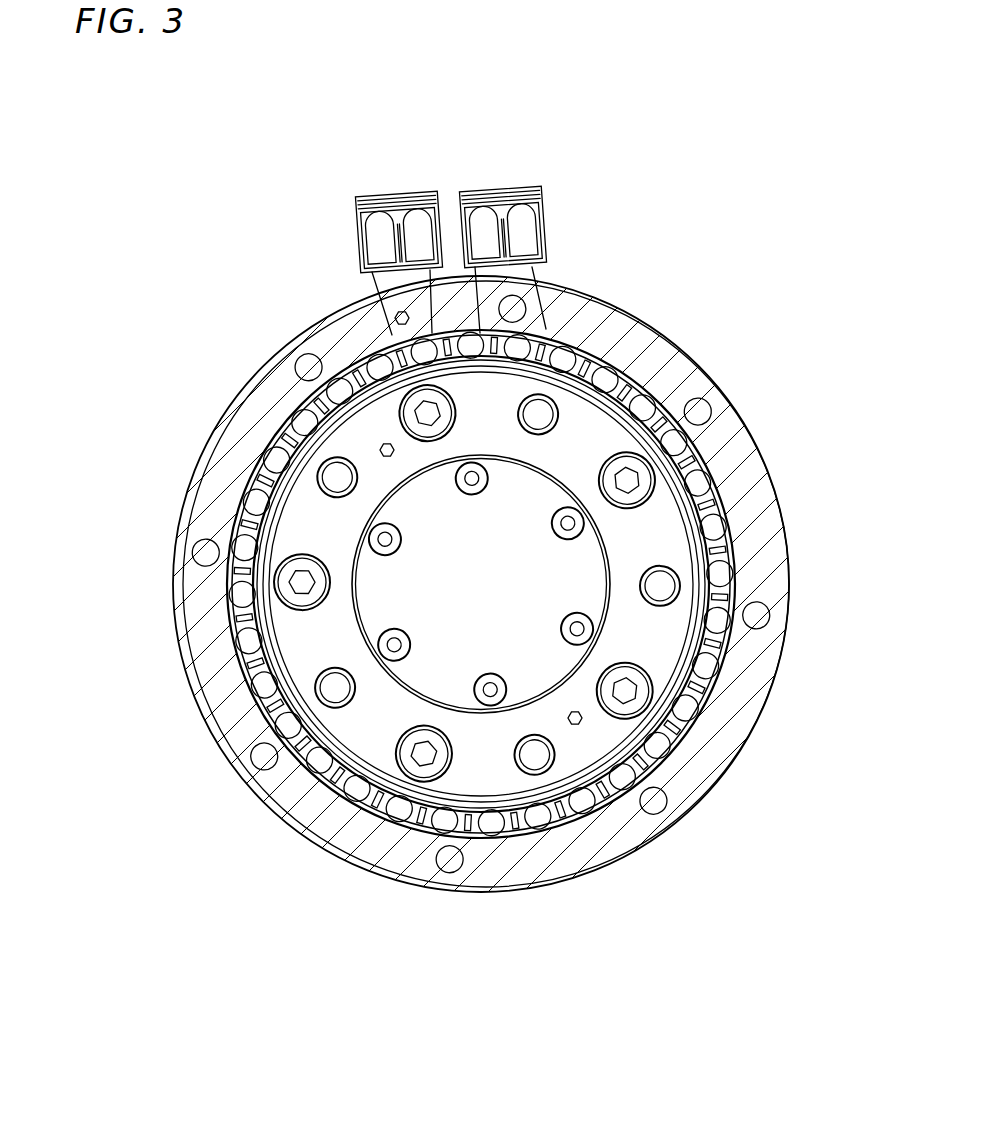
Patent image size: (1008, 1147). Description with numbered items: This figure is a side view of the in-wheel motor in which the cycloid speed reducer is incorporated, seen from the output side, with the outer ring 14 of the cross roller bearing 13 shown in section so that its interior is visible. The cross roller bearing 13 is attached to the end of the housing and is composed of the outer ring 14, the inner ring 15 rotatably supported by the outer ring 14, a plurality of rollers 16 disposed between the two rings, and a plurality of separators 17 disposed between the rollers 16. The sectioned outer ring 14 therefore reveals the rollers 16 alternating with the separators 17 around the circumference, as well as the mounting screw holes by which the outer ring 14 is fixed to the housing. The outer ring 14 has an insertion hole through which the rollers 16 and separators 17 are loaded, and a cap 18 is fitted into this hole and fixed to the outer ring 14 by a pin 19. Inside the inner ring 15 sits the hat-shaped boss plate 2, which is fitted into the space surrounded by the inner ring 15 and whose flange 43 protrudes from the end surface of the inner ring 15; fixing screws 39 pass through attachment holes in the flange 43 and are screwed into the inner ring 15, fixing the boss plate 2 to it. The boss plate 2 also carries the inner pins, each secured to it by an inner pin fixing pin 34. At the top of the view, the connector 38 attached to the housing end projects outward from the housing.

The boss plate 2 is at (437, 647).
The cross roller bearing 13 is at (122, 637).
The outer ring 14 is at (582, 308).
The inner ring 15 is at (300, 633).
The rollers 16 is at (598, 358).
The separators 17 is at (677, 425).
The cap 18 is at (432, 338).
The pin 19 is at (396, 316).
The inner pin fixing pin 34 is at (596, 614).
The connector 38 is at (487, 190).
The fixing screws 39 is at (405, 395).
The flange 43 is at (485, 783).